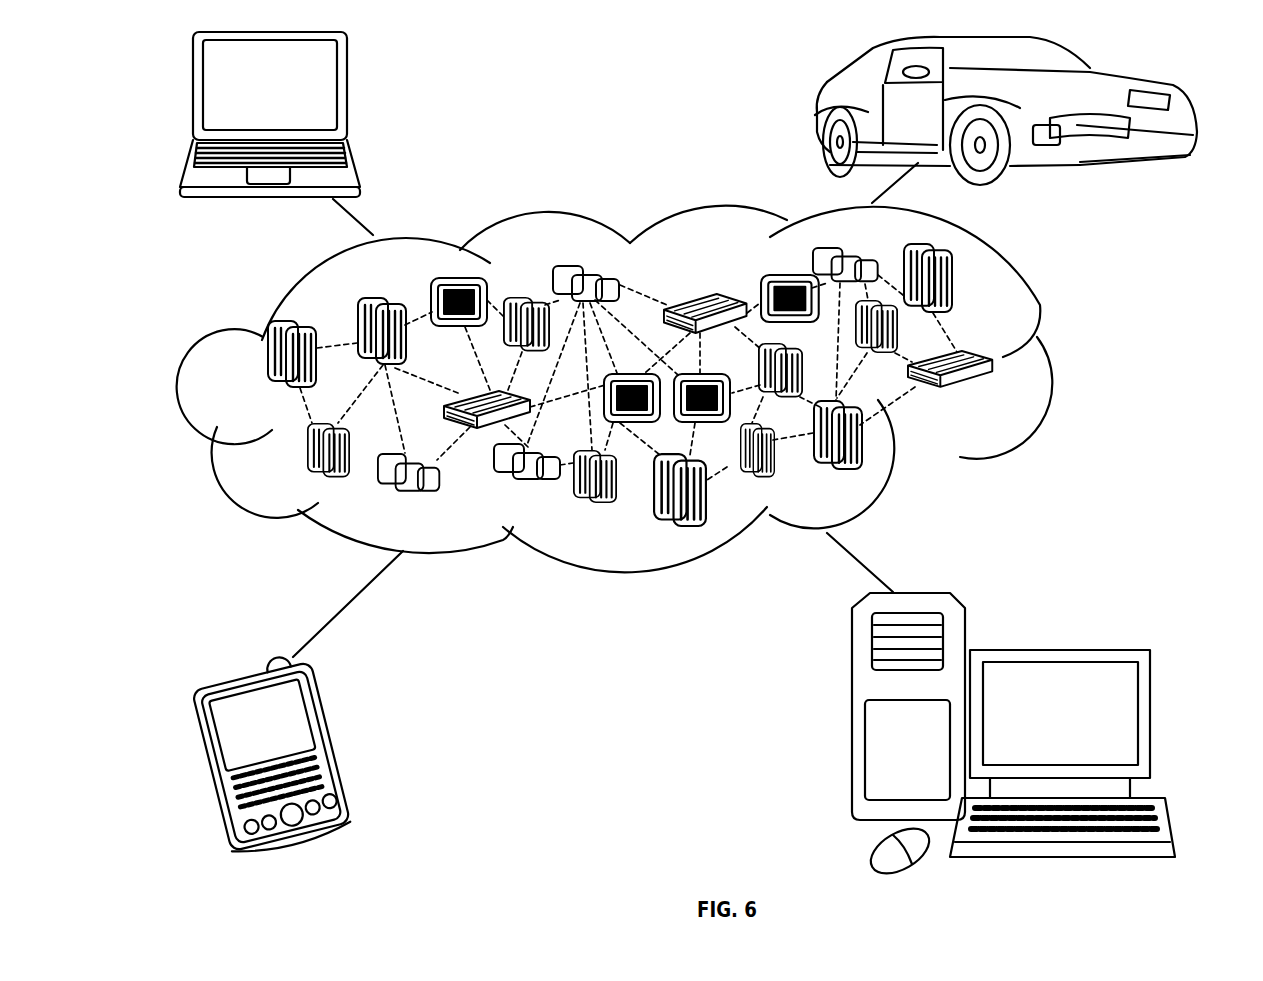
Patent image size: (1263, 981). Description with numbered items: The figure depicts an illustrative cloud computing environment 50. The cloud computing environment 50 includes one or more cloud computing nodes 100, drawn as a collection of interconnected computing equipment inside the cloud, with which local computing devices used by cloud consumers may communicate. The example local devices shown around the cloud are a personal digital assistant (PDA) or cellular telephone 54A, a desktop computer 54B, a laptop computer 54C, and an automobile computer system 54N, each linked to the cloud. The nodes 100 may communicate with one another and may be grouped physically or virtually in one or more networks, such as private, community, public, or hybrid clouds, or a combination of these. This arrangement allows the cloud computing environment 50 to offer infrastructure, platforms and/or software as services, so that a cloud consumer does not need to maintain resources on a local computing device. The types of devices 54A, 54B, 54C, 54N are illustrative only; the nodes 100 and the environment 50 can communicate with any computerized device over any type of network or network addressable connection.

The cloud computing environment 50 is at (1062, 364).
The cloud computing nodes 100 is at (997, 393).
The personal digital assistant (PDA) or cellular telephone 54A is at (333, 745).
The desktop computer 54B is at (1062, 650).
The laptop computer 54C is at (347, 92).
The automobile computer system 54N is at (819, 106).